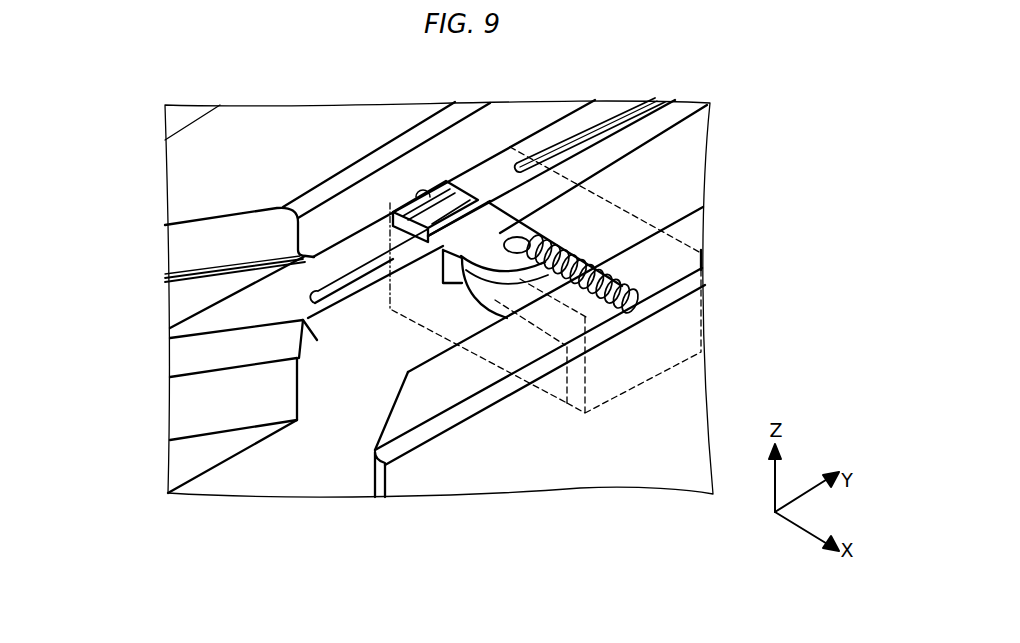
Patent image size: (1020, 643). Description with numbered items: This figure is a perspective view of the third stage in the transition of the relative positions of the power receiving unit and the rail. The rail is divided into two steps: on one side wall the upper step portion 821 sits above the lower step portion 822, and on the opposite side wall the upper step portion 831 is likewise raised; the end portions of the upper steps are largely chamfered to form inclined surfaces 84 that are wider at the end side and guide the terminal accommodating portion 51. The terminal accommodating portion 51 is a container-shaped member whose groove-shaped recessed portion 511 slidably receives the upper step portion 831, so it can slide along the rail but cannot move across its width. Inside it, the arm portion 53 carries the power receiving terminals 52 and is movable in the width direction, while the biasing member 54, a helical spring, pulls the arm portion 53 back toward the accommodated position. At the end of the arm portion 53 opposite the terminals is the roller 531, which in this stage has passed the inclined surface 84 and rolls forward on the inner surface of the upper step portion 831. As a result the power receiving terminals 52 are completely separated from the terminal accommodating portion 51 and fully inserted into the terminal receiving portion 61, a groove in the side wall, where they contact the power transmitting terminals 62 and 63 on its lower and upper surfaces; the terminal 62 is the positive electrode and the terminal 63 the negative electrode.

The terminal accommodating portion 51 is at (702, 318).
The recessed portion 511 is at (571, 388).
The power receiving terminal 52 is at (425, 192).
The arm portion 53 is at (495, 226).
The roller 531 is at (485, 298).
The biasing member 54 is at (588, 304).
The terminal receiving portion 61 is at (195, 300).
The power transmitting terminal 62 is at (347, 282).
The power transmitting terminal 63 is at (410, 182).
The upper step portion 821 is at (195, 204).
The lower step portion 822 is at (195, 460).
The upper step portion 831 is at (690, 236).
The inclined surface 84 is at (195, 251).